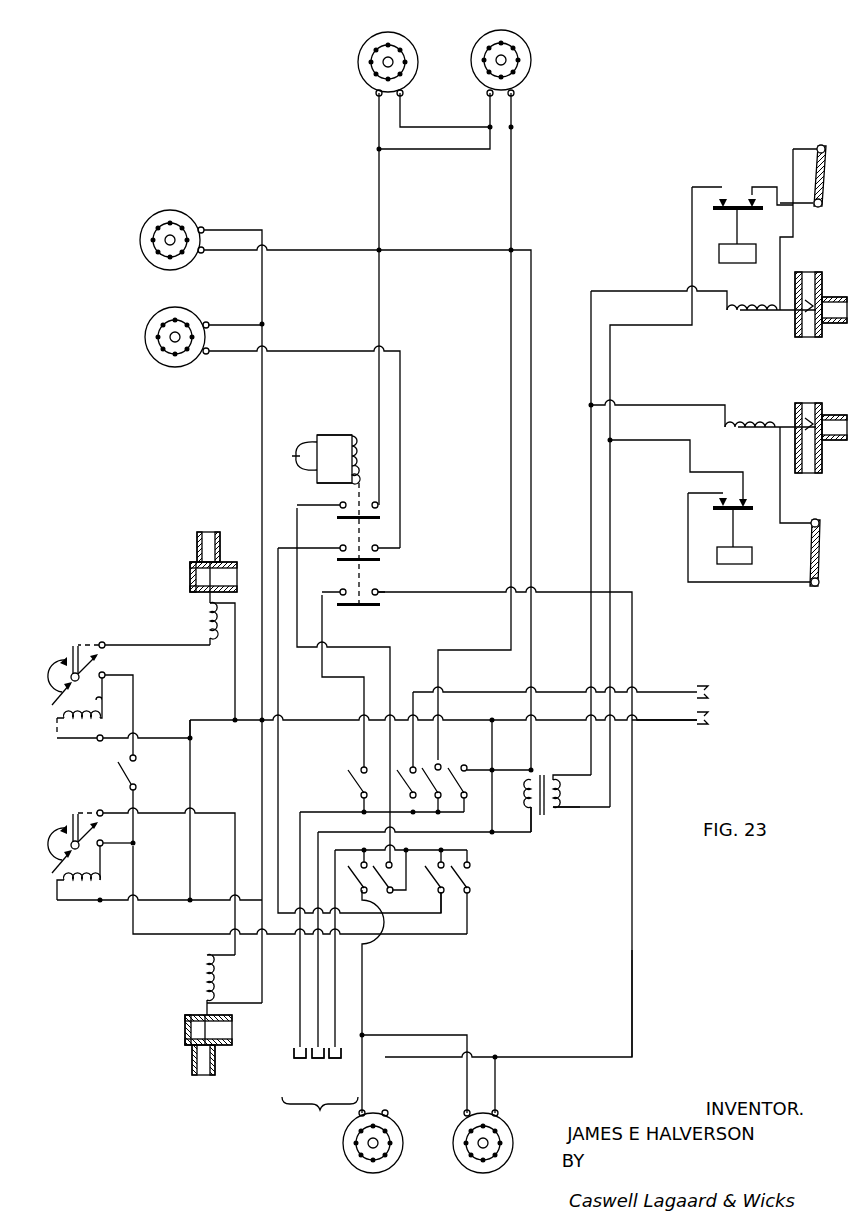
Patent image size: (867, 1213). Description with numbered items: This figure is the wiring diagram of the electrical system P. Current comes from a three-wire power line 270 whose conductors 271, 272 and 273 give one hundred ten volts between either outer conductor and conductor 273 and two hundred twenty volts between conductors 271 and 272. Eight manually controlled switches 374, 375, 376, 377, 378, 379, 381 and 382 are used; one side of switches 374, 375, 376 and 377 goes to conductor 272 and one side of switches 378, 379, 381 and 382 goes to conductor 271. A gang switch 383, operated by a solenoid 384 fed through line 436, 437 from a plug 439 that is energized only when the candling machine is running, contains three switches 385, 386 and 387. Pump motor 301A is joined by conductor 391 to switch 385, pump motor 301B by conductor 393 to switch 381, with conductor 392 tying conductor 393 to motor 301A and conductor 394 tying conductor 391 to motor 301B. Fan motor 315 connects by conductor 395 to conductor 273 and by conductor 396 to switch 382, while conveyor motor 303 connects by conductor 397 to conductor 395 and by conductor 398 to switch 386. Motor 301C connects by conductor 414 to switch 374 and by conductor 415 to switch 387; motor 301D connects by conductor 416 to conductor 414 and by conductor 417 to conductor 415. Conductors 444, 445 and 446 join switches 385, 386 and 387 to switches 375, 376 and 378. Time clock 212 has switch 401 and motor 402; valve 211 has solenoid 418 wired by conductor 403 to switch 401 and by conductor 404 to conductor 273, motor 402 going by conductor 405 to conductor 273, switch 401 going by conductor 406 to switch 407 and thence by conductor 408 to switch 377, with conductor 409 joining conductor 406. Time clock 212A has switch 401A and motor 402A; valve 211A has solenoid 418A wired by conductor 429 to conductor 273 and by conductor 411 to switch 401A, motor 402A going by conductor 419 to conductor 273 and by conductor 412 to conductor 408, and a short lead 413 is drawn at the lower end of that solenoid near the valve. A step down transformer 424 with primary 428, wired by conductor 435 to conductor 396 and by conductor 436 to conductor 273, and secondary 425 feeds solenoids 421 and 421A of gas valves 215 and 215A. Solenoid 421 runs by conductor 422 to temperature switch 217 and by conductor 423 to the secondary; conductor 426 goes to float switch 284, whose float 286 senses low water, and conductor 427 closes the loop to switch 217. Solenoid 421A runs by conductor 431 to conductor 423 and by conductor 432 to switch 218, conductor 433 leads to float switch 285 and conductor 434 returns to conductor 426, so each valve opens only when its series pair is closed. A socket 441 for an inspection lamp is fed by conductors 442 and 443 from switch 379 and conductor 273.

The motor 301A is at (362, 80).
The motor 301B is at (531, 58).
The motor 301C is at (365, 1175).
The motor 301D is at (482, 1174).
The motor 315 is at (168, 209).
The motor 303 is at (146, 331).
The conductor 392 is at (440, 126).
The conductor 394 is at (448, 150).
The conductor 391 is at (382, 286).
The conductor 393 is at (514, 220).
The conductor 396 is at (460, 254).
The conductor 395 is at (266, 230).
The conductor 397 is at (240, 322).
The conductor 398 is at (226, 362).
The gang switch 383 is at (357, 431).
The solenoid 384 is at (363, 450).
The plug 439 is at (290, 456).
The line 437 is at (316, 478).
The conductor 436 is at (317, 432).
The switch 385 is at (378, 504).
The switch 386 is at (378, 546).
The switch 387 is at (378, 590).
The conductor 444 is at (376, 646).
The conductor 446 is at (365, 677).
The conductor 445 is at (280, 698).
The conductor 415 is at (463, 596).
The conductor 416 is at (470, 1034).
The conductor 414 is at (364, 1095).
The conductor 417 is at (497, 1095).
The manually controlled switch 374 is at (372, 937).
The conductor 271 is at (298, 988).
The conductor 272 is at (336, 972).
The conductor 273 is at (232, 724).
The three-wire power line 270 is at (335, 1012).
The conductor 442 is at (652, 691).
The socket 441 is at (713, 693).
The conductor 443 is at (650, 722).
The manually controlled switch 379 is at (410, 766).
The manually controlled switch 378 is at (361, 769).
The manually controlled switch 381 is at (437, 764).
The manually controlled switch 382 is at (467, 766).
The conductor 435 is at (508, 768).
The manually controlled switch 375 is at (388, 860).
The manually controlled switch 376 is at (445, 893).
The manually controlled switch 377 is at (470, 892).
The conductor 408 is at (155, 932).
The primary 428 is at (533, 779).
The secondary 425 is at (557, 796).
The step down voltage transformer 424 is at (556, 810).
The conductor 423 is at (618, 290).
The conductor 426 is at (612, 500).
The conductor 427 is at (765, 186).
The float switch 284 is at (728, 211).
The float 286 is at (740, 264).
The temperature controlled switch 217 is at (820, 145).
The conductor 422 is at (782, 256).
The solenoid 421 is at (745, 318).
The solenoid operated valve 215 is at (795, 335).
The conductor 431 is at (700, 404).
The solenoid 421A is at (752, 435).
The solenoid operated valve 215A is at (810, 404).
The conductor 432 is at (782, 500).
The conductor 434 is at (690, 439).
The float switch 285 is at (718, 510).
The conductor 433 is at (738, 584).
The temperature controlled switch 218 is at (815, 588).
The electric operated shut-off valve 211 is at (192, 560).
The solenoid 418 is at (203, 617).
The conductor 404 is at (233, 692).
The conductor 403 is at (127, 643).
The switch 401 is at (73, 644).
The time clock 212 is at (58, 696).
The conductor 406 is at (135, 675).
The conductor 409 is at (106, 702).
The motor 402 is at (78, 722).
The conductor 405 is at (163, 740).
The switch 407 is at (130, 787).
The conductor 411 is at (235, 814).
The switch 401A is at (72, 832).
The time clock 212A is at (68, 852).
The conductor 412 is at (103, 864).
The motor 402A is at (70, 884).
The conductor 419 is at (108, 903).
The conductor 429 is at (255, 861).
The conductor 413 is at (262, 1006).
The solenoid 418A is at (203, 980).
The valve 211A is at (183, 1045).
The electrical system P is at (632, 992).